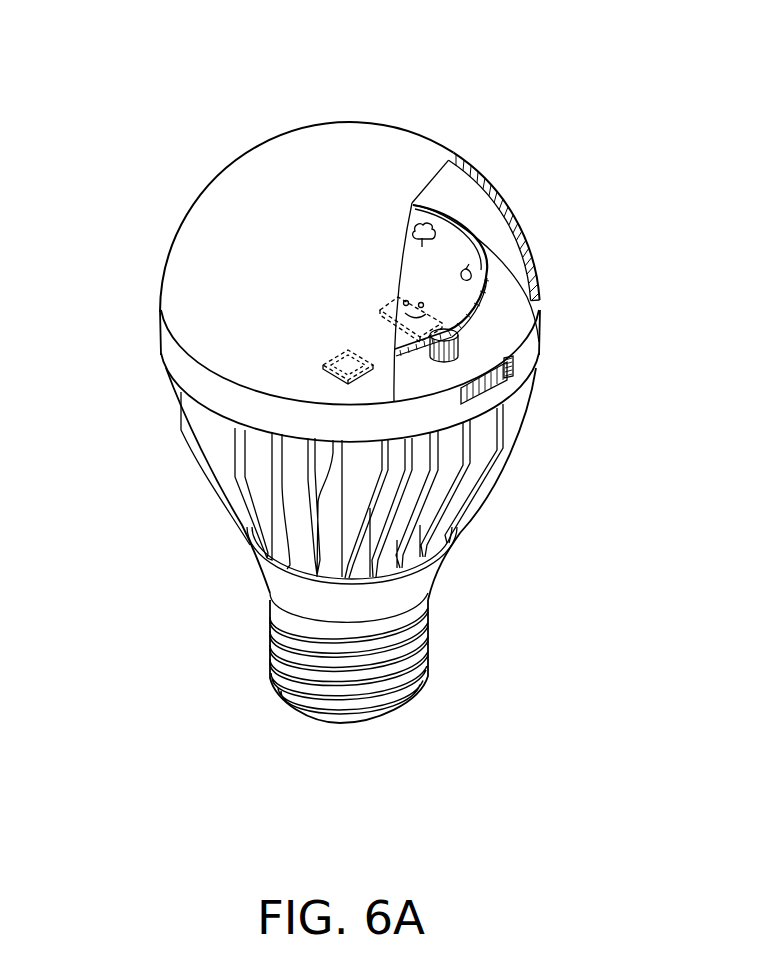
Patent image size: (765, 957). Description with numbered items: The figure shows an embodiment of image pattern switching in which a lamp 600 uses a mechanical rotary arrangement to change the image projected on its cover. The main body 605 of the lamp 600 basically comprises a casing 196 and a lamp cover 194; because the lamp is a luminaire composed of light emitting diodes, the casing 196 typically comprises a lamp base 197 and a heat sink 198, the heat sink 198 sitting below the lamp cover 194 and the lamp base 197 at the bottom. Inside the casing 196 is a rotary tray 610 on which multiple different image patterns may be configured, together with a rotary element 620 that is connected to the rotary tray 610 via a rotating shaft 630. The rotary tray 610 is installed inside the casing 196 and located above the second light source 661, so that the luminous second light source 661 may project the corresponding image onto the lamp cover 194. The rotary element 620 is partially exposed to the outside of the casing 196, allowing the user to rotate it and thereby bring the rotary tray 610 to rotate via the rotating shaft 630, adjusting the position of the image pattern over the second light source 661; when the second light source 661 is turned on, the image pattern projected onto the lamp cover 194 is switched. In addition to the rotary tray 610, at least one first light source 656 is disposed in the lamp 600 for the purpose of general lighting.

The lamp 600 is at (229, 147).
The lamp cover 194 is at (360, 126).
The rotary tray 610 is at (468, 255).
The rotating shaft 630 is at (459, 353).
The rotary element 620 is at (508, 393).
The second light source 661 is at (382, 310).
The first light source 656 is at (325, 363).
The main body 605 is at (172, 401).
The casing 196 is at (605, 447).
The heat sink 198 is at (485, 435).
The lamp base 197 is at (432, 664).